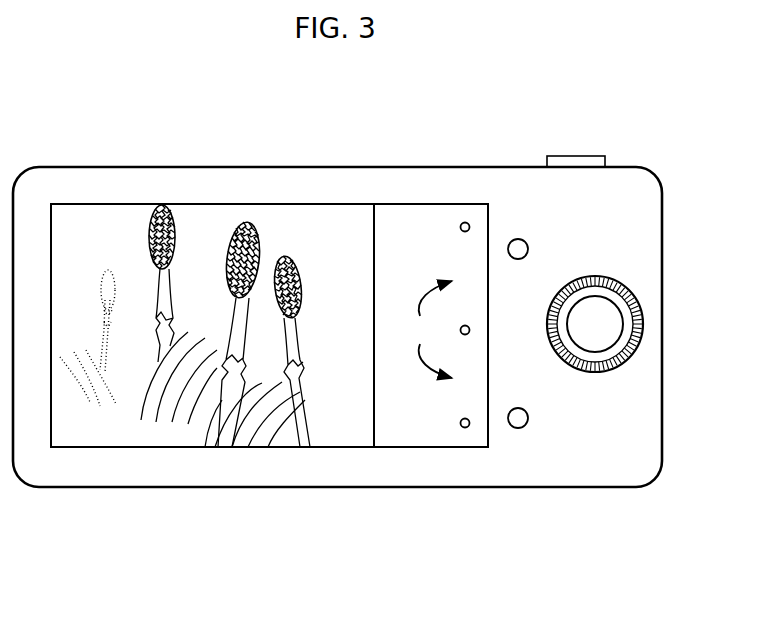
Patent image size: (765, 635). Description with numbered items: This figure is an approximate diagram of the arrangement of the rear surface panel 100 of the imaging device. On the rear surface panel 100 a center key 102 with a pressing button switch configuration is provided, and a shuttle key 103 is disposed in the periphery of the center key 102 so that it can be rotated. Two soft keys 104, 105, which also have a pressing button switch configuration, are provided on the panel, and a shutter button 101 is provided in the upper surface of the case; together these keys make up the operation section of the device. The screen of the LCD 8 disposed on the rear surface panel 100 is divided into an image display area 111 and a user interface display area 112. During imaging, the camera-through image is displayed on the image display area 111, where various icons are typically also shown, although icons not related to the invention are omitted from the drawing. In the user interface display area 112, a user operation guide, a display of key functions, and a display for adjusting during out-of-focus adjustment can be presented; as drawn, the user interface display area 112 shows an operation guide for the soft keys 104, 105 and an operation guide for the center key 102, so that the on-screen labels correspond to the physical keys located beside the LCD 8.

The rear surface panel 100 is at (165, 100).
The LCD 8 is at (321, 205).
The image display area 111 is at (94, 213).
The user interface display area 112 is at (402, 210).
The shutter button 101 is at (584, 158).
The soft key 104 is at (518, 239).
The soft key 105 is at (516, 428).
The center key 102 is at (595, 340).
The shuttle key 103 is at (627, 360).